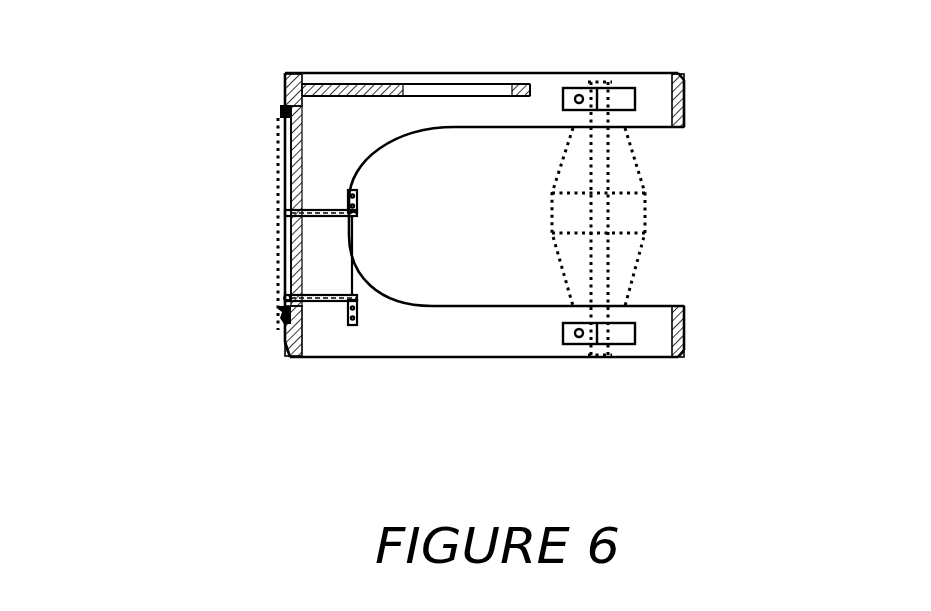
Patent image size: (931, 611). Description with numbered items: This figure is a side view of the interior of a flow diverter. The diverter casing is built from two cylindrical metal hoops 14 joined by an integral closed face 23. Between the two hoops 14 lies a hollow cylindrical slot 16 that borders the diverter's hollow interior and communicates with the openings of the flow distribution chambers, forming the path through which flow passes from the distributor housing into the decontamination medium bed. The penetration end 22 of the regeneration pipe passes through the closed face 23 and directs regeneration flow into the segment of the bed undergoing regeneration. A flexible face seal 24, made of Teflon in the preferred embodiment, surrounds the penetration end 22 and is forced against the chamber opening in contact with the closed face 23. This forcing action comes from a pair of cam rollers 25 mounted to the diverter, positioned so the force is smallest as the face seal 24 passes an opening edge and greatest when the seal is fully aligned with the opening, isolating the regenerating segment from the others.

The metal hoops 14 is at (410, 336).
The hollow cylindrical slot 16 is at (658, 265).
The penetration end of the regeneration pipe 22 is at (323, 312).
The closed face 23 is at (280, 168).
The flexible face seal 24 is at (280, 116).
The cam rollers 25 is at (640, 177).